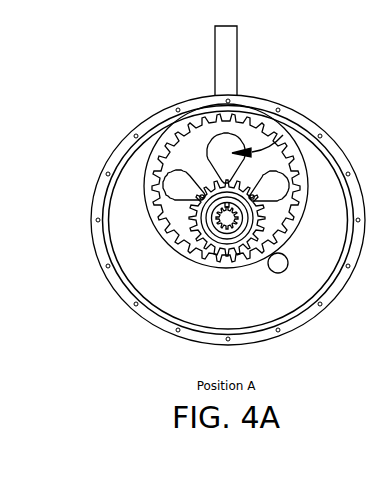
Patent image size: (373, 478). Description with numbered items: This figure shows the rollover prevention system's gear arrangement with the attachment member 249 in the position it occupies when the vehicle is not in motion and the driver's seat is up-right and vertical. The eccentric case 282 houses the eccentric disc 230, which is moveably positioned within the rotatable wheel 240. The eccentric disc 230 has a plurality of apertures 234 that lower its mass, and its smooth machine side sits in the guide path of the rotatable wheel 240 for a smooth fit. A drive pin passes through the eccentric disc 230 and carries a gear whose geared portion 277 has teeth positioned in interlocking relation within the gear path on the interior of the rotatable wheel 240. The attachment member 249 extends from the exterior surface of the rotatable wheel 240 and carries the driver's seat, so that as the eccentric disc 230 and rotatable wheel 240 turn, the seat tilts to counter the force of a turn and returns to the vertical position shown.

The attachment member 249 is at (215, 42).
The apertures 234 is at (270, 158).
The eccentric case 282 is at (93, 200).
The eccentric disc 230 is at (285, 222).
The geared portion 277 is at (219, 242).
The rotatable wheel 240 is at (226, 266).